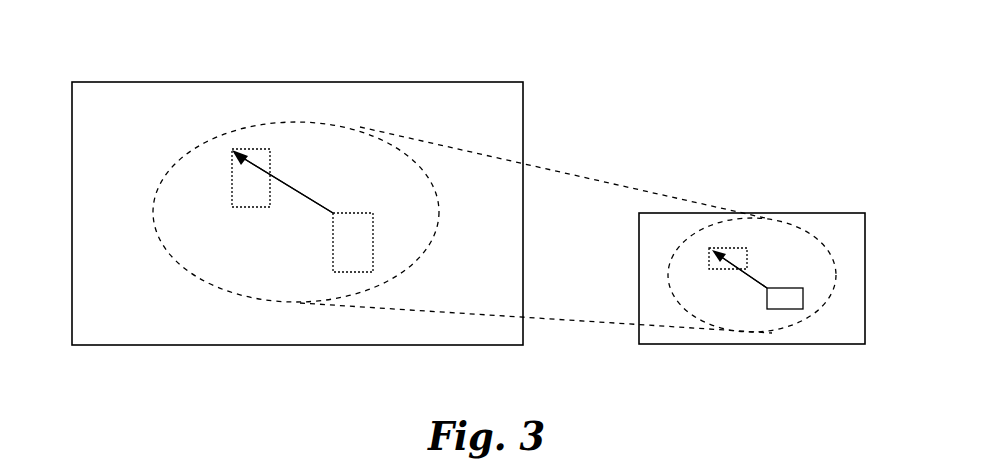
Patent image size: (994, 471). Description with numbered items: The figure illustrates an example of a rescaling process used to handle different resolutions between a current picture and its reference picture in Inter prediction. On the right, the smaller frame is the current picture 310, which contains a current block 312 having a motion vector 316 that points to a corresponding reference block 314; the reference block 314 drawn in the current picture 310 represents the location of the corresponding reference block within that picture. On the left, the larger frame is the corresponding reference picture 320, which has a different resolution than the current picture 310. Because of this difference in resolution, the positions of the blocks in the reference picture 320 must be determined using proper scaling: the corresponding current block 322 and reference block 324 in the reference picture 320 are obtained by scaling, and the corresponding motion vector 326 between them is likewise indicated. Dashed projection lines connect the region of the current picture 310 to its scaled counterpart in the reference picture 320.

The current picture 310 is at (812, 213).
The current block 312 is at (803, 298).
The reference block 314 is at (708, 257).
The motion vector 316 is at (757, 281).
The reference picture 320 is at (214, 82).
The corresponding current block 322 is at (373, 242).
The reference block 324 is at (232, 180).
The corresponding motion vector 326 is at (297, 188).